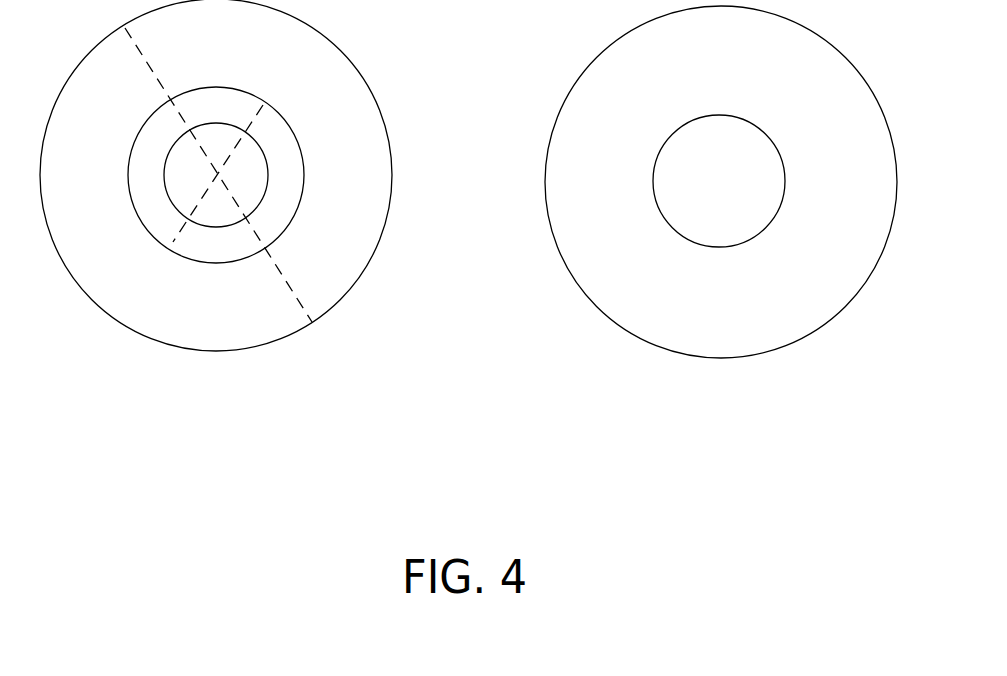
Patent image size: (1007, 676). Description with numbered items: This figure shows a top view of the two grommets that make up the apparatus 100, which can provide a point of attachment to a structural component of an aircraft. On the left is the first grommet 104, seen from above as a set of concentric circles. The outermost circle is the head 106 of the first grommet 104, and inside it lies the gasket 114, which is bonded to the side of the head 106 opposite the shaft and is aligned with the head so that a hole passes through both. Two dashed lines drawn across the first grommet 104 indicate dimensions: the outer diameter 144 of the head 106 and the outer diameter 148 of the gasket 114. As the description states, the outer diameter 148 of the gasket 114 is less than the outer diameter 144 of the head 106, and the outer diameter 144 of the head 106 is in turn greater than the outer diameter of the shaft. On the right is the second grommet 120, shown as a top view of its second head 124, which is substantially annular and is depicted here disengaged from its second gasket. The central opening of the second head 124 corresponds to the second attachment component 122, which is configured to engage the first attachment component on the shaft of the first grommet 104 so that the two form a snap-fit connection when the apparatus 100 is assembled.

The apparatus 100 is at (814, 499).
The first grommet 104 is at (121, 389).
The head 106 is at (112, 67).
The gasket 114 is at (152, 167).
The second grommet 120 is at (849, 382).
The second attachment component 122 is at (785, 193).
The second head 124 is at (863, 110).
The outer diameter of the head 144 is at (280, 268).
The outer diameter of the gasket 148 is at (172, 240).